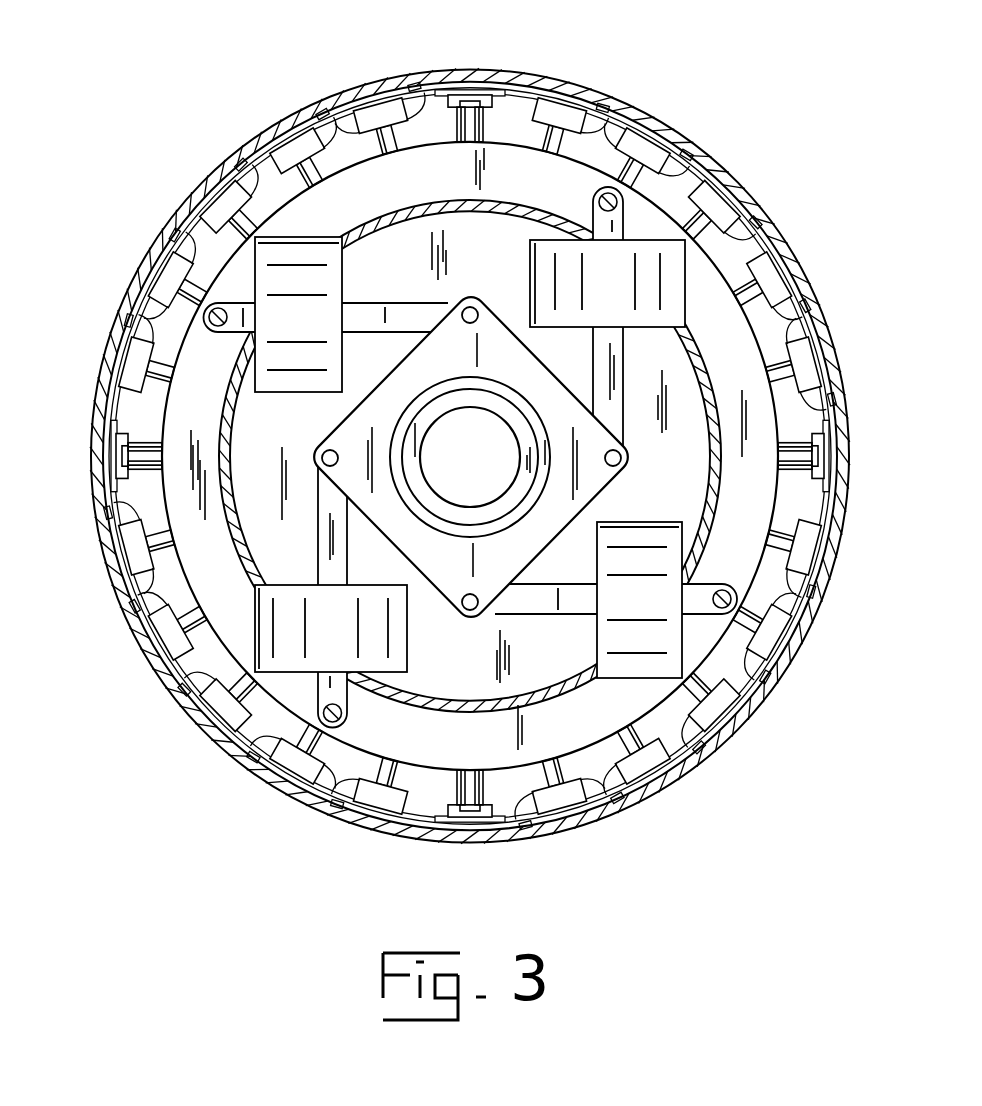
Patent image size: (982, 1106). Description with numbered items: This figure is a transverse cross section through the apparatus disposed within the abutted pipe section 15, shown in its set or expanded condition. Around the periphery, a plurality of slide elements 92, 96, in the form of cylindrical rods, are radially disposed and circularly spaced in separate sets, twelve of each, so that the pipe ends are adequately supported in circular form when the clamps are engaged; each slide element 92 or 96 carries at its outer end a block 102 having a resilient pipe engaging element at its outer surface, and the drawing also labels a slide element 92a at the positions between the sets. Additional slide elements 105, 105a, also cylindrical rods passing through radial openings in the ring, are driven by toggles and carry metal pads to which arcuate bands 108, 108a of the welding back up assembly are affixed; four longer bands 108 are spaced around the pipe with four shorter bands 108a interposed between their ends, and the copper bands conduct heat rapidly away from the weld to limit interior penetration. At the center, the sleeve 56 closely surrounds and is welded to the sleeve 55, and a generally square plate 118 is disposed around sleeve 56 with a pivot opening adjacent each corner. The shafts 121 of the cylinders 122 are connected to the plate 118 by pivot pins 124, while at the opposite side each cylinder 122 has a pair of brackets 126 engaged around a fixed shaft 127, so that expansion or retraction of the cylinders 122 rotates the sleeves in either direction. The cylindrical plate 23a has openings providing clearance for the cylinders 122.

The pipe section 15 is at (528, 82).
The cylindrical plate 23a is at (440, 207).
The sleeve 55 is at (527, 421).
The sleeve 56 is at (520, 392).
The slide element 92 is at (225, 200).
The double radial strut 92a is at (488, 106).
The slide element 96 is at (680, 172).
The block 102 is at (508, 92).
The slide element 105 is at (370, 123).
The slide element 105a is at (442, 90).
The arcuate band 108 is at (247, 172).
The arcuate band 108a is at (452, 88).
The plate 118 is at (626, 474).
The shaft 121 is at (393, 306).
The cylinder 122 is at (341, 354).
The pivot pin 124 is at (477, 308).
The bracket 126 is at (618, 215).
The shaft 127 is at (598, 203).